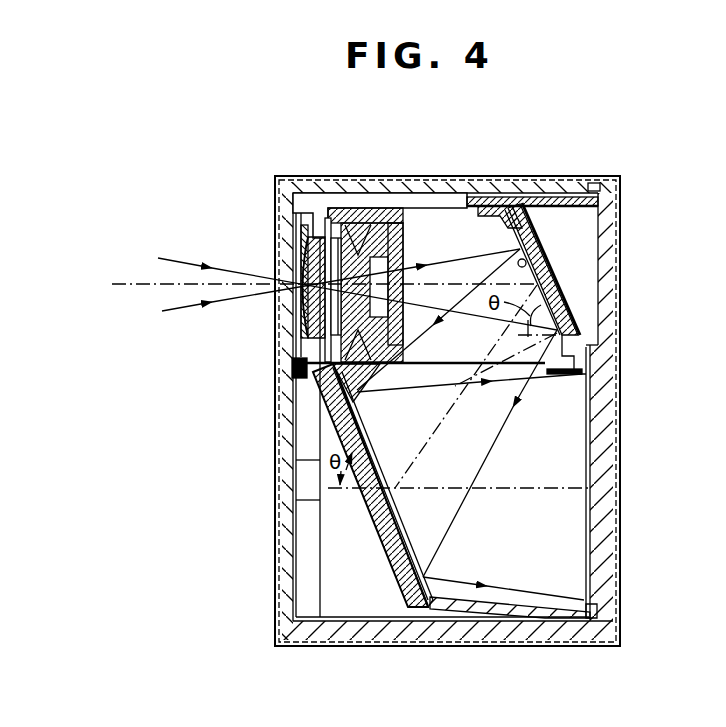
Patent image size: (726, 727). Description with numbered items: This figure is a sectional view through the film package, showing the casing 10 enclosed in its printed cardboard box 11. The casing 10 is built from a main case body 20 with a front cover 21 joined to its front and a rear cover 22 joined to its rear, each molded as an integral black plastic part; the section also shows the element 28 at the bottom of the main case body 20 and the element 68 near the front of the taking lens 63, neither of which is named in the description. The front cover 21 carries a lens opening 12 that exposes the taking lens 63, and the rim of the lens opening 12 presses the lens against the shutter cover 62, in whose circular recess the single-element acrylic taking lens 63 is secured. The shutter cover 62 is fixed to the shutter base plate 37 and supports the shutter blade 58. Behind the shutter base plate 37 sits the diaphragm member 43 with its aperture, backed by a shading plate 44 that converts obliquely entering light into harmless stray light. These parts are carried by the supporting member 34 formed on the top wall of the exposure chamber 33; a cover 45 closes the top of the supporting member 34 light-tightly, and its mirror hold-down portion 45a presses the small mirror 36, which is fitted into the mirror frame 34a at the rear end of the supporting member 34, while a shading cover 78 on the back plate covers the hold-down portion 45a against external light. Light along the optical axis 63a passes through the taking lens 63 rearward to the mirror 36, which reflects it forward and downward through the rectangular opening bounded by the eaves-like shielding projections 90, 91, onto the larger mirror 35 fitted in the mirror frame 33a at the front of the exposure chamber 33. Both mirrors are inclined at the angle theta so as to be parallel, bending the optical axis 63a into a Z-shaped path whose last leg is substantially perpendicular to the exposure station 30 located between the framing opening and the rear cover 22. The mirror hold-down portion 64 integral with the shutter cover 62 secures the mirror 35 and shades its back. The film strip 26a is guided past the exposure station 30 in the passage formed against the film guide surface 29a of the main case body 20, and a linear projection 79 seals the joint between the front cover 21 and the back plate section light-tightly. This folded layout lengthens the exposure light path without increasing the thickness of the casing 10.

The casing 10 is at (270, 437).
The cardboard box 11 is at (280, 495).
The lens opening 12 is at (297, 329).
The main case body 20 is at (499, 608).
The front cover 21 is at (290, 560).
The rear cover 22 is at (607, 471).
The film strip 26a is at (592, 525).
The bottom wall 28 is at (410, 619).
The film guide surface 29a is at (588, 612).
The exposure station 30 is at (585, 456).
The exposure chamber 33 is at (463, 449).
The mirror frame 33a is at (390, 500).
The supporting member 34 is at (501, 214).
The mirror frame 34a is at (530, 250).
The mirror 35 is at (373, 432).
The mirror 36 is at (562, 300).
The shutter base plate 37 is at (343, 212).
The diaphragm member 43 is at (378, 222).
The shading plate 44 is at (405, 247).
The cover 45 is at (440, 207).
The mirror hold-down portion 45a is at (575, 300).
The shutter blade 58 is at (300, 268).
The shutter cover 62 is at (297, 366).
The taking lens 63 is at (300, 301).
The optical axis 63a is at (135, 284).
The mirror hold-down portion 64 is at (384, 523).
The lens front surface 68 is at (296, 246).
The shading cover 78 is at (549, 197).
The linear projection 79 is at (592, 188).
The shielding projection 90 is at (557, 378).
The shielding projection 91 is at (350, 372).